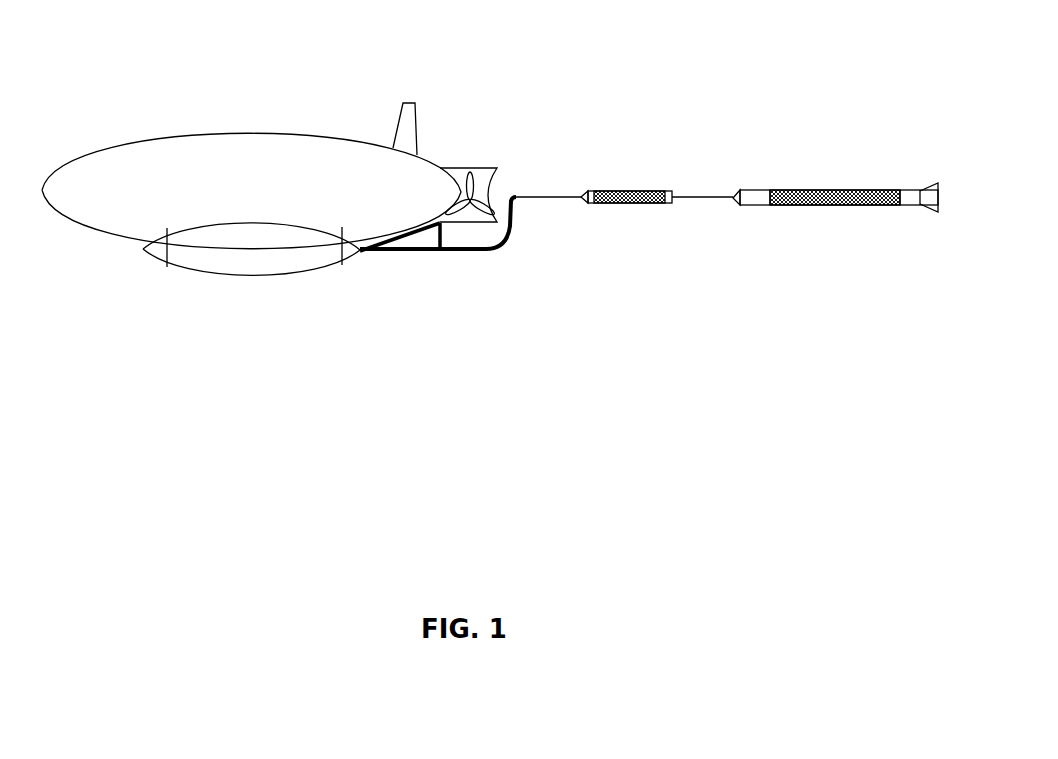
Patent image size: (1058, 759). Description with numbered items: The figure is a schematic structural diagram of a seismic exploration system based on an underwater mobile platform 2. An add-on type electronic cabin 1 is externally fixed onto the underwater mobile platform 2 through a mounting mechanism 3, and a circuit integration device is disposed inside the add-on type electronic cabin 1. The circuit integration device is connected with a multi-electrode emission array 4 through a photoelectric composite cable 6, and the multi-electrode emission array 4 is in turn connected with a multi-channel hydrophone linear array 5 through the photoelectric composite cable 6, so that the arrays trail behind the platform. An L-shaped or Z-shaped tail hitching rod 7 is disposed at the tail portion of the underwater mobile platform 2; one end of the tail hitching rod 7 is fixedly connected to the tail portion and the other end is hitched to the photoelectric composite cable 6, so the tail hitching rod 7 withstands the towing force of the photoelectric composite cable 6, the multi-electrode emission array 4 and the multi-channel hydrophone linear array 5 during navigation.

The add-on type electronic cabin 1 is at (262, 278).
The underwater mobile platform 2 is at (280, 135).
The mounting mechanism 3 is at (170, 263).
The multi-electrode emission array 4 is at (625, 203).
The multi-channel hydrophone linear array 5 is at (820, 207).
The photoelectric composite cable 6 is at (540, 195).
The tail hitching rod 7 is at (443, 251).